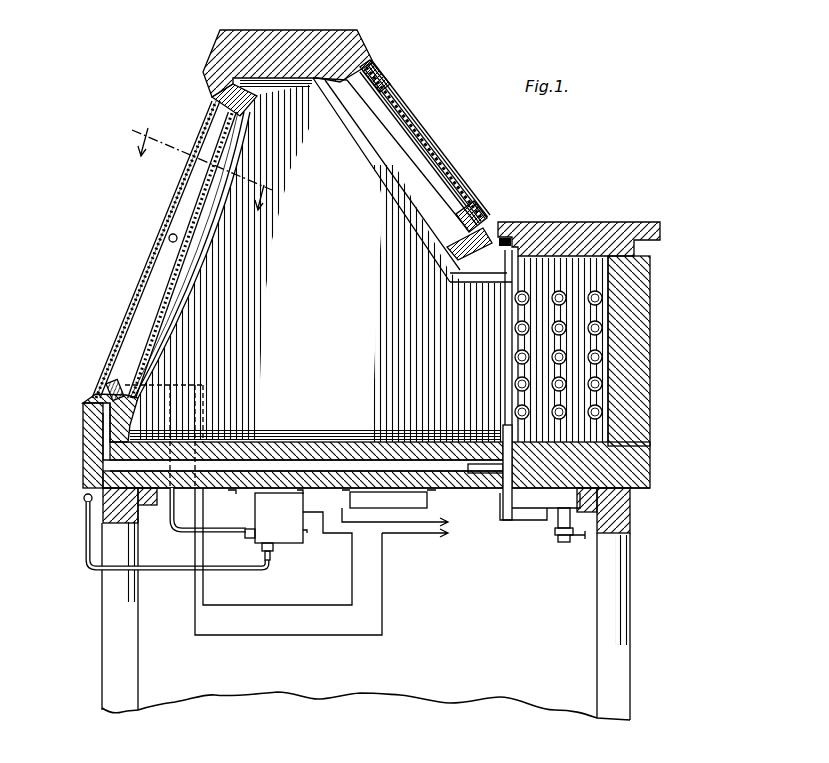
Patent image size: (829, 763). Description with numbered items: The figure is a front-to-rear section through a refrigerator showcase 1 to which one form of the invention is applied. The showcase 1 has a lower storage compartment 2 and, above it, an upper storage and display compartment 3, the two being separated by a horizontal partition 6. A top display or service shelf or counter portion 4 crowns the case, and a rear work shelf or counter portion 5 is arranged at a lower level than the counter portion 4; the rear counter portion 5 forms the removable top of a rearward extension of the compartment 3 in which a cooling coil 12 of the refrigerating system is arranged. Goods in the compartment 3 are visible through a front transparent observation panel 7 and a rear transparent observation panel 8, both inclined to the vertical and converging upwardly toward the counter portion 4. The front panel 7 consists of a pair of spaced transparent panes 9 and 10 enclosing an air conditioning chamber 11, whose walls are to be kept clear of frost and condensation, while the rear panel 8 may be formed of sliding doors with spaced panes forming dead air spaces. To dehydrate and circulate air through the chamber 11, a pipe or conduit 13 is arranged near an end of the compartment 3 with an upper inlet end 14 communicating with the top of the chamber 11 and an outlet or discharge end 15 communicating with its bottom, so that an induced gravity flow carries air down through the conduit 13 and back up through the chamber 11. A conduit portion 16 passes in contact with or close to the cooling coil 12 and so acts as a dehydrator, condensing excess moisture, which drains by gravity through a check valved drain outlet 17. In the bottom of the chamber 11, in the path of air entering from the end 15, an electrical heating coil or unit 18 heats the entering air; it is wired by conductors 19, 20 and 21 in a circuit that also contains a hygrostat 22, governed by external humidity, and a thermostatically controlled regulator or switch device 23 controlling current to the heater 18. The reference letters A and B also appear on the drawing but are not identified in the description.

The showcase 1 is at (84, 436).
The lower storage compartment 2 is at (366, 419).
The upper storage and display compartment 3 is at (317, 262).
The top display or service shelf or counter portion 4 is at (242, 30).
The rear work shelf or counter portion 5 is at (566, 222).
The horizontal partition 6 is at (334, 444).
The front transparent observation panel 7 is at (205, 130).
The rear transparent observation panel 8 is at (433, 150).
The transparent pane 9 is at (150, 270).
The transparent pane 10 is at (167, 297).
The air conditioning chamber 11 is at (142, 321).
The cooling coil 12 is at (592, 312).
The pipe or conduit 13 is at (388, 180).
The upper inlet end 14 is at (228, 98).
The outlet or discharge end 15 is at (98, 413).
The conduit portion 16 is at (298, 466).
The check valved drain outlet 17 is at (528, 520).
The electrical heating coil or unit 18 is at (112, 364).
The conductor 19 is at (196, 604).
The conductor 20 is at (274, 606).
The conductor 21 is at (322, 520).
The hygrostat 22 is at (402, 500).
The thermostatically controlled regulator or switch device 23 is at (256, 510).
The pipe connection A is at (82, 498).
The pivot B is at (168, 238).